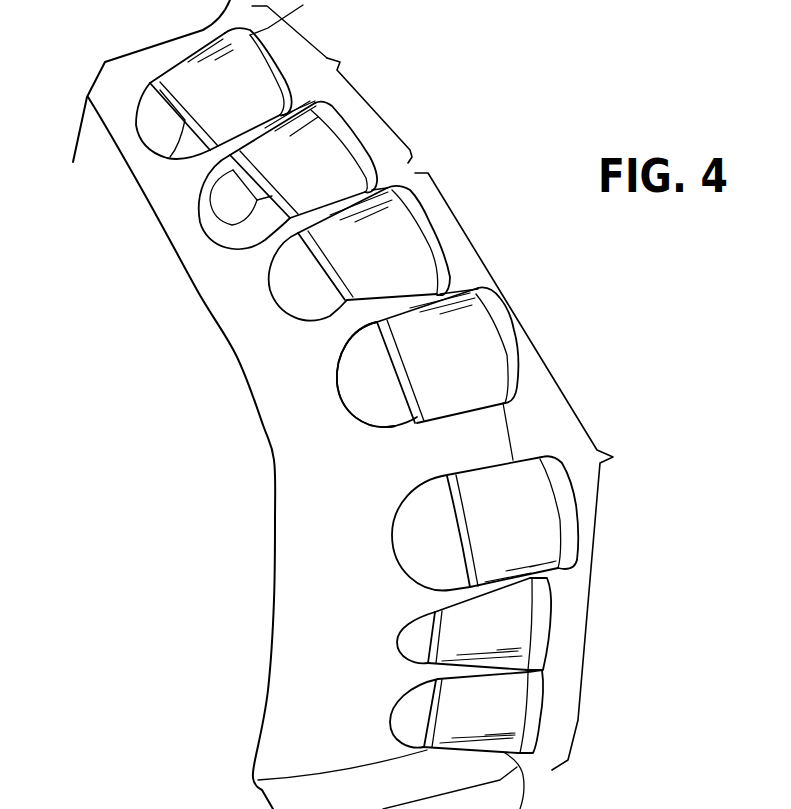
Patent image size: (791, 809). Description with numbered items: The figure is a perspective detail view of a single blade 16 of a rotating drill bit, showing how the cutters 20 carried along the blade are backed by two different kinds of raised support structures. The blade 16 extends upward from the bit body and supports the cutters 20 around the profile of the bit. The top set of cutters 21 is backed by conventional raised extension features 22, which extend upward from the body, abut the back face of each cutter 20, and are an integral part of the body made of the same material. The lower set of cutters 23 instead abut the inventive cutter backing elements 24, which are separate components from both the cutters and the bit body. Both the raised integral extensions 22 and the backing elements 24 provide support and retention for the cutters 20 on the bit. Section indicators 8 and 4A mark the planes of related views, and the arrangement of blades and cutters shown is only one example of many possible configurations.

The blade 16 is at (507, 423).
The cutter 20 is at (506, 717).
The top set of cutters 21 is at (369, 100).
The raised extension feature 22 is at (225, 172).
The lower set of cutters 23 is at (530, 471).
The cutter backing element 24 is at (340, 350).
The section line 8 is at (252, 413).
The section line 4A is at (392, 68).